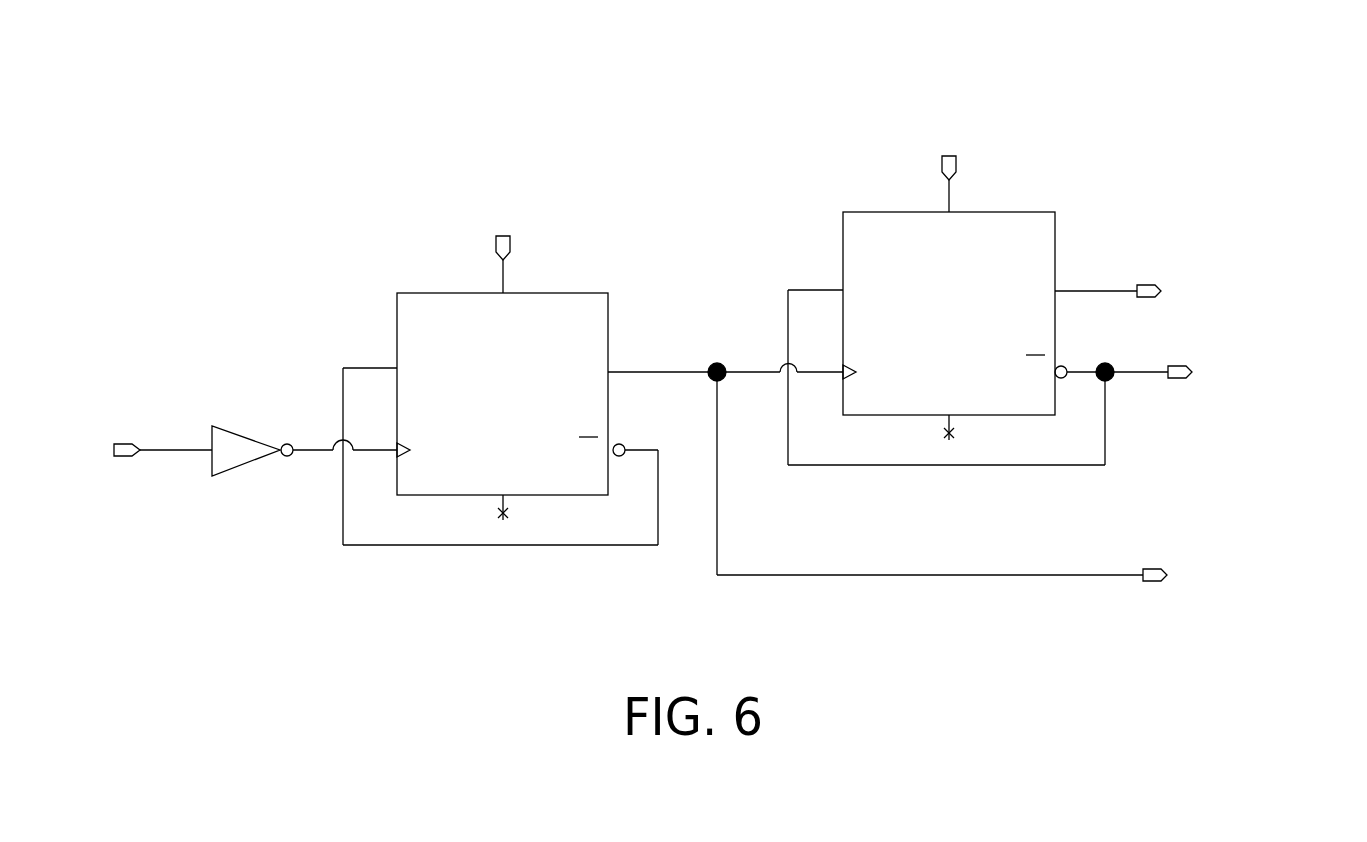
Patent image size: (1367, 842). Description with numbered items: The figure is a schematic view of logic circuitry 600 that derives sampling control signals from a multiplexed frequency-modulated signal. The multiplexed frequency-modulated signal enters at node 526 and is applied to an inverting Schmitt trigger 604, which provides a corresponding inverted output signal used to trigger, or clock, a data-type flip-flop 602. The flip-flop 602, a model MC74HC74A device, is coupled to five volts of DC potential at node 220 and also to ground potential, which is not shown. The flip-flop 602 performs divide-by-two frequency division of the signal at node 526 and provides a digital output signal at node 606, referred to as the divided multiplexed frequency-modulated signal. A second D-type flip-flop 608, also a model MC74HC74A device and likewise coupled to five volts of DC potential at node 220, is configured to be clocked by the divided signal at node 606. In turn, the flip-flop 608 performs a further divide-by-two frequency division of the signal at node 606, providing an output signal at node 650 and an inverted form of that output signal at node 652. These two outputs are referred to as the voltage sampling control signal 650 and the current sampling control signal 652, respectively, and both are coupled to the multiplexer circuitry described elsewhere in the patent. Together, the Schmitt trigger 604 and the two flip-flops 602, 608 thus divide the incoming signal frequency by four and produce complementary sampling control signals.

The logic circuitry 600 is at (1124, 78).
The node 220 is at (510, 238).
The node 526 is at (123, 457).
The inverting Schmitt trigger 604 is at (235, 430).
The data-type flip-flop 602 is at (484, 398).
The node 606 is at (722, 362).
The D type flip-flop 608 is at (932, 318).
The node 650 is at (1147, 284).
The node 652 is at (1183, 379).